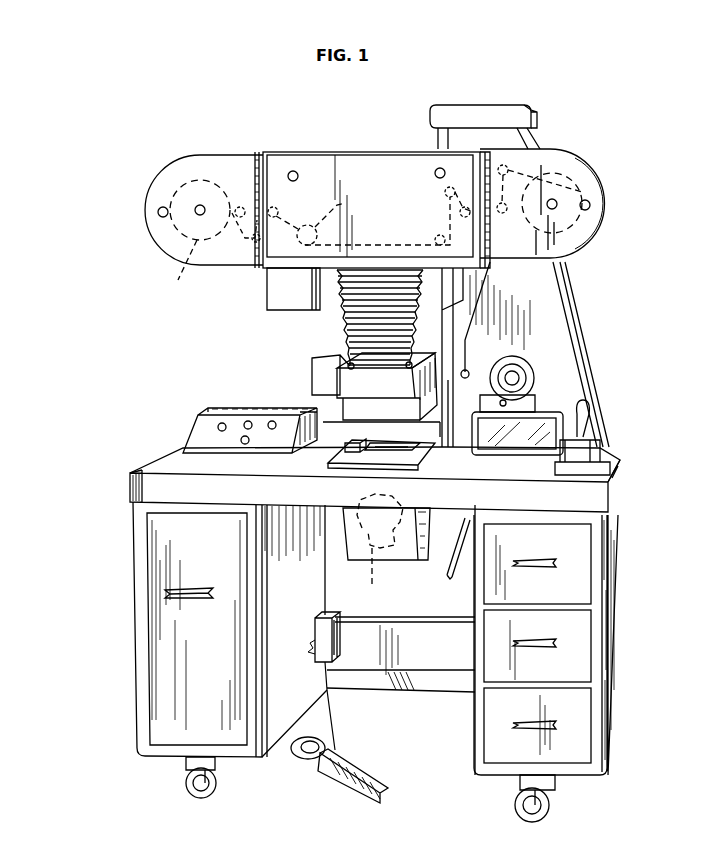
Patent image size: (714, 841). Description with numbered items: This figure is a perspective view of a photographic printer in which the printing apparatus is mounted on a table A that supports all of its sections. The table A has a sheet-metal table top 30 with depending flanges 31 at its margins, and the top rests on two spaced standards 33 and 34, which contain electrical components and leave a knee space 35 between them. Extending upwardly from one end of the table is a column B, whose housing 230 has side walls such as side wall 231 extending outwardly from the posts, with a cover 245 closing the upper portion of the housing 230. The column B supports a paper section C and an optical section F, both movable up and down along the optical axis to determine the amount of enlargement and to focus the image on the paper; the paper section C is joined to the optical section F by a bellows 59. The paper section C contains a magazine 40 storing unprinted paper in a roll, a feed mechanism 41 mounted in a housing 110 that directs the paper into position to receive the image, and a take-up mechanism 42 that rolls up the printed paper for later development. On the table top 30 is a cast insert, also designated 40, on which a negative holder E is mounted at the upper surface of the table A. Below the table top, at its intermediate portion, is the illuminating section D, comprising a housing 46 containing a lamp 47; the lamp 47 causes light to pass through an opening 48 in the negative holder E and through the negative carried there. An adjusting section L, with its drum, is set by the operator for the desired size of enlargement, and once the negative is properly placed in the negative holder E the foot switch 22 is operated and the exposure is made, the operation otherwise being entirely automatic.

The paper section C is at (150, 228).
The magazine 40 is at (214, 255).
The head housing 110 is at (315, 163).
The feed mechanism 41 is at (370, 216).
The take-up mechanism 42 is at (600, 190).
The cover 245 is at (488, 107).
The bellows 59 is at (345, 320).
The optical section F is at (350, 387).
The column B is at (590, 332).
The housing 230 is at (545, 303).
The side wall 231 is at (565, 378).
The adjusting section L is at (527, 362).
The opening 48 is at (422, 455).
The negative holder E is at (340, 449).
The table top 30 is at (170, 466).
The depending flanges 31 is at (138, 503).
The table A is at (615, 490).
The standard 33 is at (168, 650).
The housing 46 is at (355, 545).
The lamp 47 is at (380, 549).
The illuminating section D is at (415, 562).
The foot switch 22 is at (350, 785).
The knee space 35 is at (447, 733).
The standard 34 is at (578, 662).